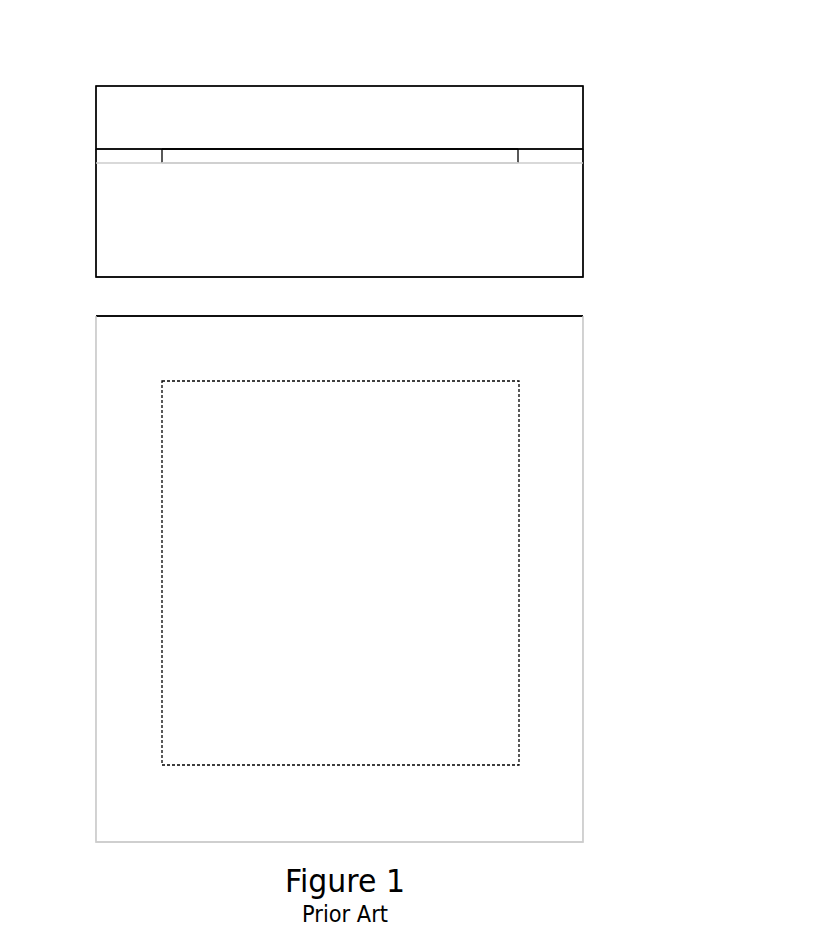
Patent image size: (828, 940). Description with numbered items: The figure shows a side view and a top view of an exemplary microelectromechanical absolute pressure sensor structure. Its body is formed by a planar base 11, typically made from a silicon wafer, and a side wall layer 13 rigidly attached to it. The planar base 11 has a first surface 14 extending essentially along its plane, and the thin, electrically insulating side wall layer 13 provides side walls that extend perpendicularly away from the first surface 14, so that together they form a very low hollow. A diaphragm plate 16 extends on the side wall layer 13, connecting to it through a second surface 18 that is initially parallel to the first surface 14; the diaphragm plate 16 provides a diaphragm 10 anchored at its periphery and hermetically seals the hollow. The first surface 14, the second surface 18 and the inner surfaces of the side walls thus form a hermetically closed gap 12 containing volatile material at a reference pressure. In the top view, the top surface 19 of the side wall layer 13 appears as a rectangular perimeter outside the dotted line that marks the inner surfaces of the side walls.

The diaphragm 10 is at (372, 424).
The planar base 11 is at (570, 229).
The gap 12 is at (193, 153).
The side wall layer 13 is at (560, 157).
The first surface 14 is at (177, 165).
The diaphragm plate 16 is at (570, 121).
The second surface 18 is at (482, 148).
The top surface 19 is at (550, 431).